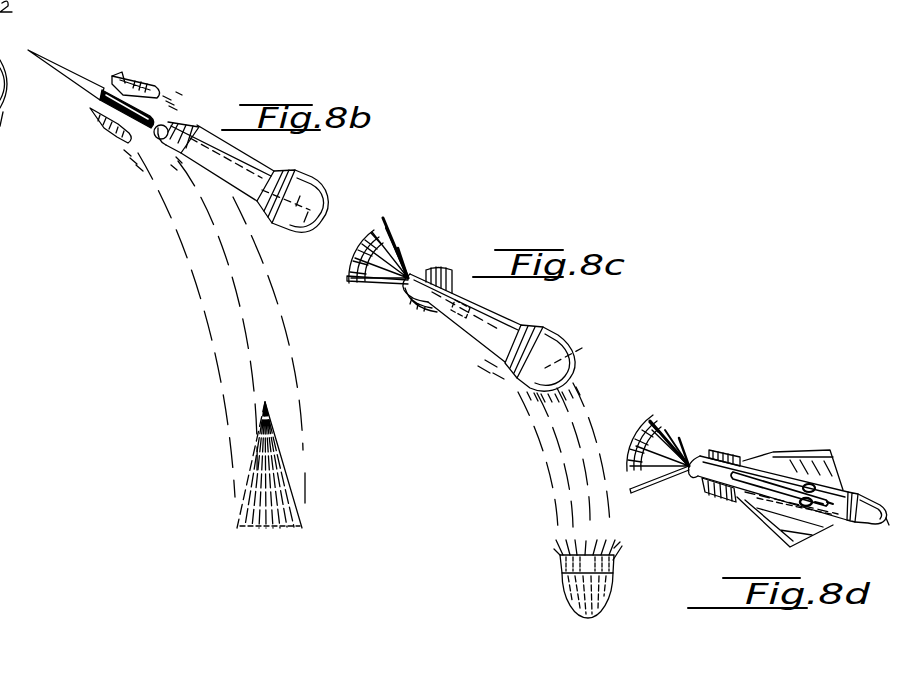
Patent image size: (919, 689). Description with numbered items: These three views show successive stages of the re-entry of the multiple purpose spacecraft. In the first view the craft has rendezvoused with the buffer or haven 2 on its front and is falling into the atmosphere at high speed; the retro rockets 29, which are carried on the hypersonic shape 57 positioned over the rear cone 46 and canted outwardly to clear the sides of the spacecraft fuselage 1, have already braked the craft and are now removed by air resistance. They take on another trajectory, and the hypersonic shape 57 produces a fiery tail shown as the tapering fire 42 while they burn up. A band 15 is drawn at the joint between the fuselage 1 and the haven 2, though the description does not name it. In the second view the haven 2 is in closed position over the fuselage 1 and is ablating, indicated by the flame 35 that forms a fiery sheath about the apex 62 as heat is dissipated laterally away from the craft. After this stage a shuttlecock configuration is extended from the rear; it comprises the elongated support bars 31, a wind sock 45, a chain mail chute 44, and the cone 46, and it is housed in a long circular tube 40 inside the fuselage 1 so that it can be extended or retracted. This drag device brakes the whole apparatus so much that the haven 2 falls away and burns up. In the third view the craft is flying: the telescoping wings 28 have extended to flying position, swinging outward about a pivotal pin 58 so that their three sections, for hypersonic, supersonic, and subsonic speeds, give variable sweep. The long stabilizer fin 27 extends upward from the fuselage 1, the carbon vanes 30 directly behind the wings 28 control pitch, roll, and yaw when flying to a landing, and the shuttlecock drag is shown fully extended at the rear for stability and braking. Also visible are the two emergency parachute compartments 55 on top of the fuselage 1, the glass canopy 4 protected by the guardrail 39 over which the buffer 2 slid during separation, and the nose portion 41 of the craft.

In FIG. 8B, the spacecraft fuselage 1 is at (241, 170).
In FIG. 8C, the spacecraft fuselage 1 is at (513, 423).
In FIG. 8D, the spacecraft fuselage 1 is at (790, 467).
In FIG. 8B, the buffer or haven 2 is at (304, 192).
In FIG. 8C, the buffer or haven 2 is at (577, 444).
In FIG. 8D, the glass canopy 4 is at (866, 507).
In FIG. 8B, the band 15 is at (258, 205).
In FIG. 8C, the band 15 is at (520, 325).
In FIG. 8D, the stabilizer fin 27 is at (767, 480).
In FIG. 8D, the telescoping wings 28 is at (815, 452).
In FIG. 8B, the retro rockets 29 is at (140, 78).
In FIG. 8B, the carbon vanes 30 is at (177, 119).
In FIG. 8C, the carbon vanes 30 is at (448, 272).
In FIG. 8D, the carbon vanes 30 is at (730, 452).
In FIG. 8C, the elongated support bars 31 is at (388, 234).
In FIG. 8D, the elongated support bars 31 is at (667, 432).
In FIG. 8C, the flame 35 is at (494, 368).
In FIG. 8D, the guardrail 39 is at (848, 524).
In FIG. 8C, the long circular tube 40 is at (410, 300).
In FIG. 8B, the nose portion 41 is at (294, 229).
In FIG. 8C, the nose portion 41 is at (576, 353).
In FIG. 8D, the nose portion 41 is at (885, 520).
In FIG. 8B, the tapering fire 42 is at (294, 497).
In FIG. 8C, the chain mail chute 44 is at (384, 218).
In FIG. 8D, the chain mail chute 44 is at (654, 421).
In FIG. 8C, the wind sock 45 is at (405, 242).
In FIG. 8D, the wind sock 45 is at (681, 440).
In FIG. 8B, the cone 46 is at (161, 134).
In FIG. 8C, the cone 46 is at (394, 227).
In FIG. 8D, the cone 46 is at (659, 436).
In FIG. 8D, the emergency parachute compartments 55 is at (814, 486).
In FIG. 8B, the hypersonic shape 57 is at (84, 82).
In FIG. 8D, the pivotal pin 58 is at (733, 500).
In FIG. 8B, the apex 62 is at (297, 170).
In FIG. 8C, the apex 62 is at (547, 322).